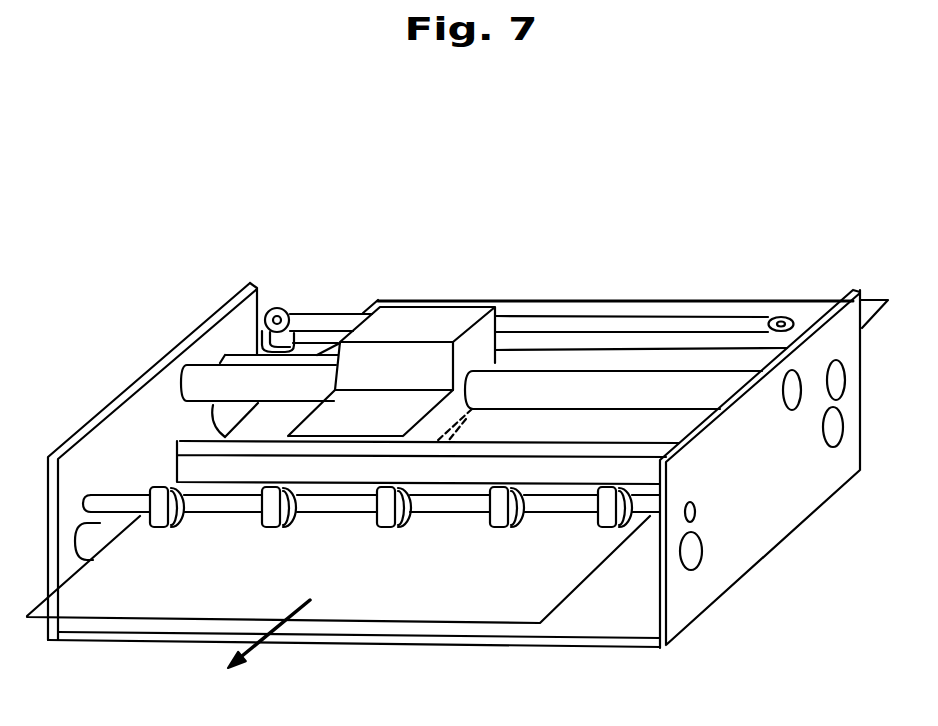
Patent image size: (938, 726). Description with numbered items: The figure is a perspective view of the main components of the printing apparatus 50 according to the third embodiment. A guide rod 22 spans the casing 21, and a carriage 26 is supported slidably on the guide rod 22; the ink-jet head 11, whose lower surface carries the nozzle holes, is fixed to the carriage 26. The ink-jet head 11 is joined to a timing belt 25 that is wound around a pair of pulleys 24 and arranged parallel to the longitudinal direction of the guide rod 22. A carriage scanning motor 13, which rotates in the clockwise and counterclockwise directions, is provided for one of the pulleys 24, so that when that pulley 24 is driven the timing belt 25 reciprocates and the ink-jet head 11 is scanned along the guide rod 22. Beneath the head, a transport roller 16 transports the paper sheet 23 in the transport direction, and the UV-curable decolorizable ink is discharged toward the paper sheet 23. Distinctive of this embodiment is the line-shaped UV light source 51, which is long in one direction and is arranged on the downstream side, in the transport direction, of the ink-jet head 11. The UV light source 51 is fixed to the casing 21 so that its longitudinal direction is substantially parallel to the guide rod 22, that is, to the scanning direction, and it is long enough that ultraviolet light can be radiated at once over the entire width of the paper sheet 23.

The printing apparatus 50 is at (189, 212).
The ink-jet head 11 is at (458, 416).
The carriage scanning motor 13 is at (262, 349).
The transport roller 16 is at (600, 525).
The casing 21 is at (133, 383).
The guide rod 22 is at (575, 385).
The paper sheet 23 is at (502, 607).
The pulleys 24 is at (284, 307).
The timing belt 25 is at (667, 317).
The carriage 26 is at (437, 313).
The UV light source 51 is at (208, 470).